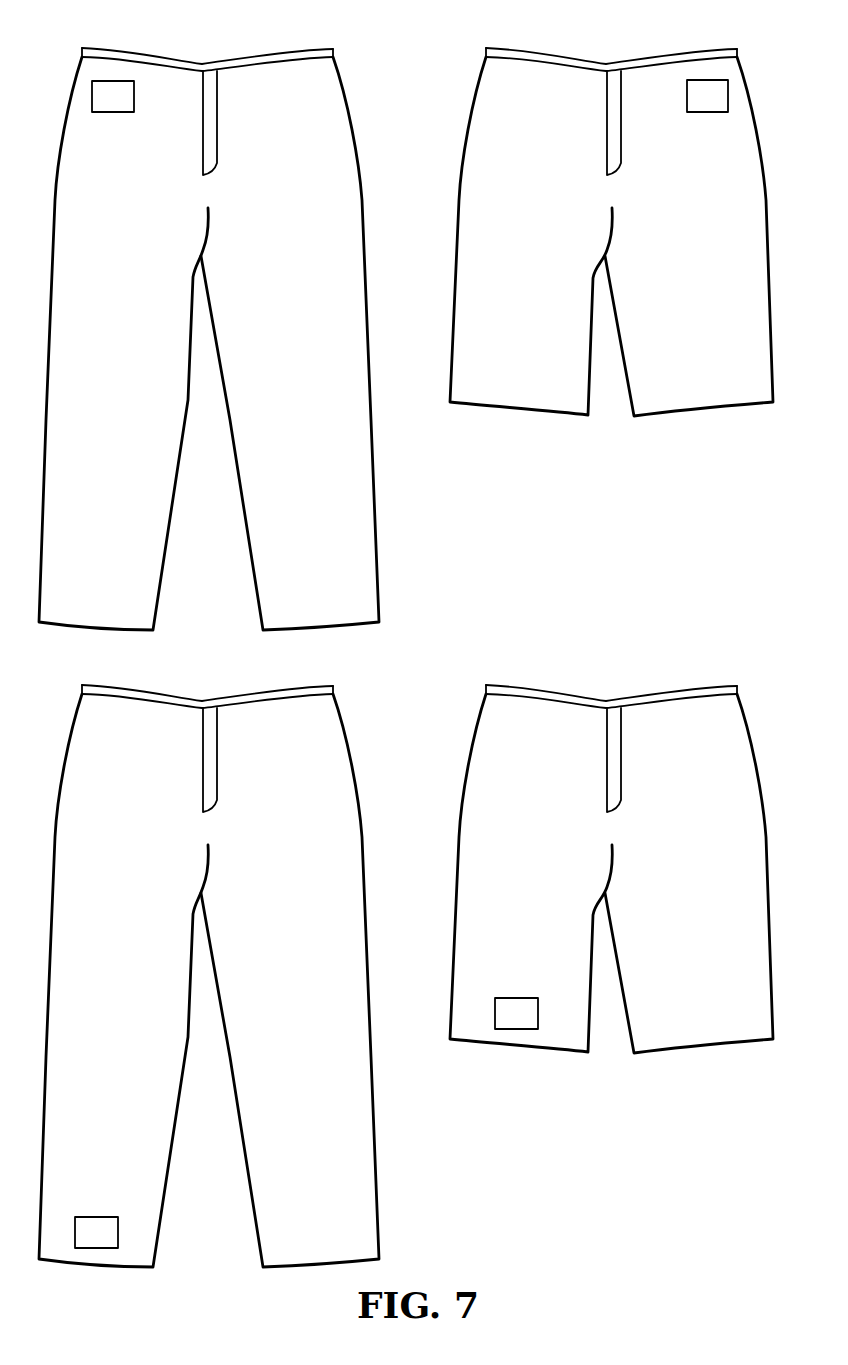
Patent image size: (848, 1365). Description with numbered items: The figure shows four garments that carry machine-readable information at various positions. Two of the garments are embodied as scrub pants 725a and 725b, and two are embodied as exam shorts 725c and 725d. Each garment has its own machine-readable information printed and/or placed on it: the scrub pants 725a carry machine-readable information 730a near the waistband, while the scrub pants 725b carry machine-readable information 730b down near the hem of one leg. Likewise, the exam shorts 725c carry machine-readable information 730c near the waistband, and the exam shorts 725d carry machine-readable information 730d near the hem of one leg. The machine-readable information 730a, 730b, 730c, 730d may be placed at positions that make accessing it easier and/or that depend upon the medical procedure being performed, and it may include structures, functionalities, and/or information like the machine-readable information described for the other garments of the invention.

The scrub pants 725a is at (205, 64).
The scrub pants 725b is at (205, 701).
The exam shorts 725c is at (612, 64).
The exam shorts 725d is at (612, 701).
The machine-readable information 730a is at (112, 113).
The machine-readable information 730b is at (95, 1215).
The machine-readable information 730c is at (707, 113).
The machine-readable information 730d is at (517, 997).